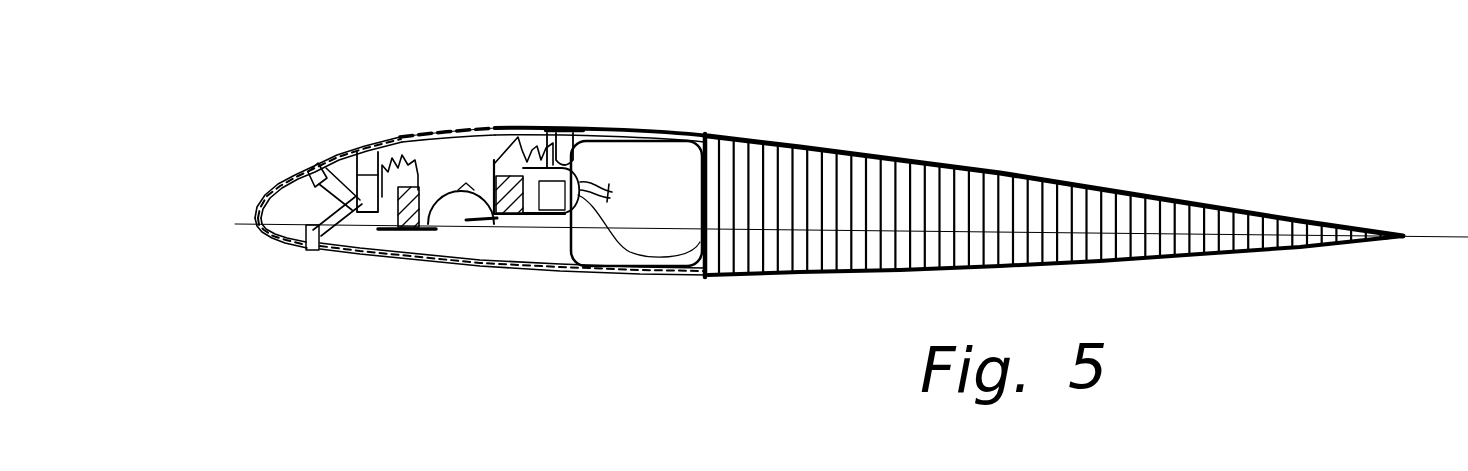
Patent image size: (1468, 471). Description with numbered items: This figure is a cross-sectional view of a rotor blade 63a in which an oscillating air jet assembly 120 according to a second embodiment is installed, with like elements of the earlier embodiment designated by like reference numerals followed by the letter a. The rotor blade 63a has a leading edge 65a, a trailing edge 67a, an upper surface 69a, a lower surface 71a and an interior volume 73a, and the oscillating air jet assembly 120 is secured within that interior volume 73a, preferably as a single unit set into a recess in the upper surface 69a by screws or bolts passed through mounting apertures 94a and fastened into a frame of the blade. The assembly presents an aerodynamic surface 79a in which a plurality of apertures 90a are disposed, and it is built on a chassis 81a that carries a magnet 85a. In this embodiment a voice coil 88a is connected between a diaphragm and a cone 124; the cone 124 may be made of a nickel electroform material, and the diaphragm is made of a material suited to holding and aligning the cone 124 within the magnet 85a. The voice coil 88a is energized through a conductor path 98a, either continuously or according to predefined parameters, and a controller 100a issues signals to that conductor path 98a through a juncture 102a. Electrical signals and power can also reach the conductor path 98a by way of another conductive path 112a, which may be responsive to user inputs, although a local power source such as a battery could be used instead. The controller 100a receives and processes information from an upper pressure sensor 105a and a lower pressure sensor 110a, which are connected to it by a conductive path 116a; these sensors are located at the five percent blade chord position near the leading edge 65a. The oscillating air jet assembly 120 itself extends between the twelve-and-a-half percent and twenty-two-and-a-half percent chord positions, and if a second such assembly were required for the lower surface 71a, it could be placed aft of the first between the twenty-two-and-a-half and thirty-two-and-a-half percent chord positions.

The rotor blade 63a is at (1148, 194).
The leading edge 65a is at (254, 219).
The trailing edge 67a is at (1403, 233).
The upper surface 69a is at (1003, 172).
The lower surface 71a is at (1257, 252).
The interior volume 73a is at (660, 207).
The aerodynamic surface 79a is at (555, 129).
The chassis 81a is at (534, 216).
The magnet 85a is at (505, 236).
The voice coil 88a is at (428, 232).
The apertures 90a is at (508, 131).
The mounting apertures 94a is at (312, 158).
The conductor path 98a is at (712, 138).
The controller 100a is at (579, 212).
The juncture 102a is at (605, 205).
The upper pressure sensor 105a is at (306, 170).
The lower pressure sensor 110a is at (305, 250).
The other conductive path 112a is at (600, 222).
The conductive path 116a is at (372, 232).
The oscillating air jet assembly 120 is at (562, 130).
The cone 124 is at (465, 188).